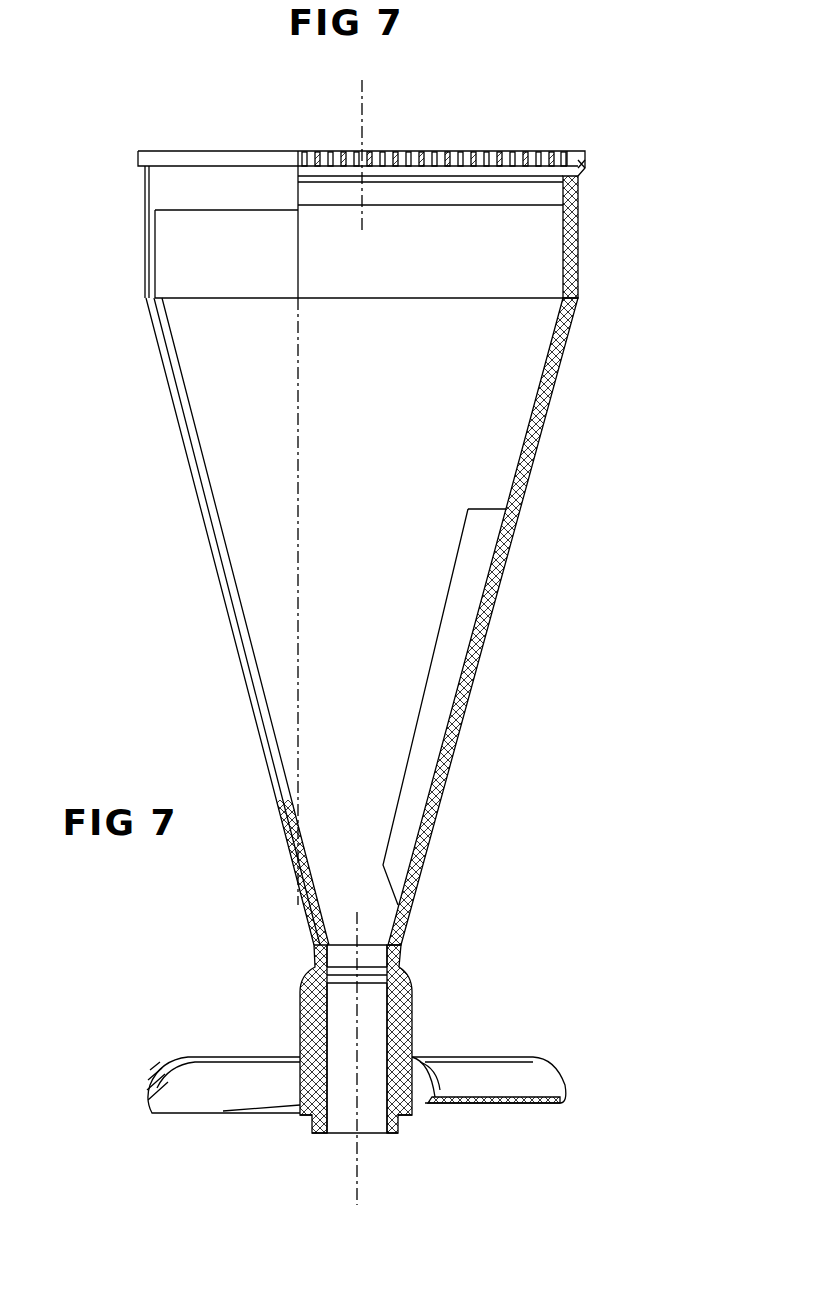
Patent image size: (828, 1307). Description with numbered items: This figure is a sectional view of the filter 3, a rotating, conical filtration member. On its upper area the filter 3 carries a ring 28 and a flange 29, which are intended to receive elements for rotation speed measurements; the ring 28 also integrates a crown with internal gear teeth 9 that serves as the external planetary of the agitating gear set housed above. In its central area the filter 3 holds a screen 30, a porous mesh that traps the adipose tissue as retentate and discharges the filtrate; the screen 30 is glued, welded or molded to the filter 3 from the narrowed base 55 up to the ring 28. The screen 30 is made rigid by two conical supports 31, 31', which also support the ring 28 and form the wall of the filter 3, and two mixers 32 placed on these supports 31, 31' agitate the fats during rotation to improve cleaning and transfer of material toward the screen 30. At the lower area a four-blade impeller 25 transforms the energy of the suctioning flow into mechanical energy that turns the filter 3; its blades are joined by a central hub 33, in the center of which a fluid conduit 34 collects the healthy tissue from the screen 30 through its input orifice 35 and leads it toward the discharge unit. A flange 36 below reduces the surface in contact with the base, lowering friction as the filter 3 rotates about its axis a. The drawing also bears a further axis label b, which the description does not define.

The filter 3 is at (135, 360).
The crown with internal gear teeth 9 is at (490, 152).
The four-blade impeller 25 is at (490, 1077).
The ring 28 is at (190, 190).
The flange 29 is at (587, 163).
The screen 30 is at (528, 297).
The conical support 31 is at (195, 621).
The conical support 31' is at (514, 621).
The mixer 32 is at (430, 727).
The hub 33 is at (298, 990).
The fluid conduit 34 is at (370, 1025).
The input orifice 35 is at (370, 957).
The flange 36 is at (403, 1120).
The narrowed base 55 is at (315, 957).
The axis a is at (370, 1061).
The axis b is at (376, 155).